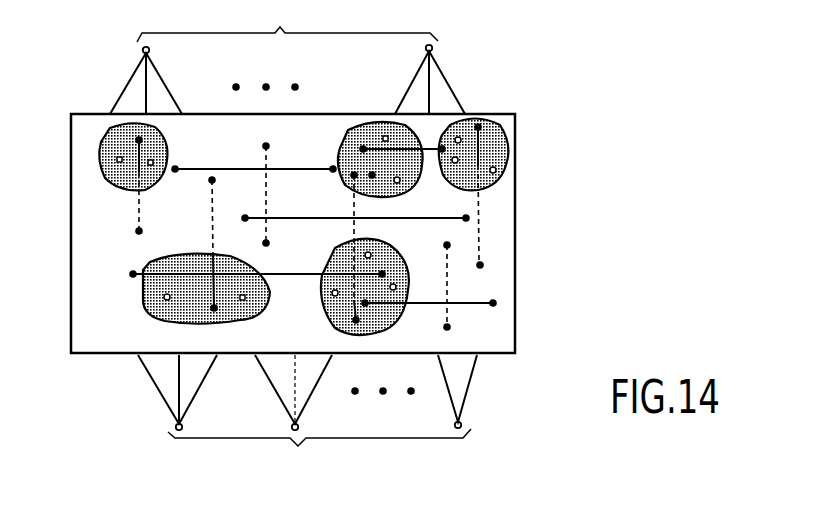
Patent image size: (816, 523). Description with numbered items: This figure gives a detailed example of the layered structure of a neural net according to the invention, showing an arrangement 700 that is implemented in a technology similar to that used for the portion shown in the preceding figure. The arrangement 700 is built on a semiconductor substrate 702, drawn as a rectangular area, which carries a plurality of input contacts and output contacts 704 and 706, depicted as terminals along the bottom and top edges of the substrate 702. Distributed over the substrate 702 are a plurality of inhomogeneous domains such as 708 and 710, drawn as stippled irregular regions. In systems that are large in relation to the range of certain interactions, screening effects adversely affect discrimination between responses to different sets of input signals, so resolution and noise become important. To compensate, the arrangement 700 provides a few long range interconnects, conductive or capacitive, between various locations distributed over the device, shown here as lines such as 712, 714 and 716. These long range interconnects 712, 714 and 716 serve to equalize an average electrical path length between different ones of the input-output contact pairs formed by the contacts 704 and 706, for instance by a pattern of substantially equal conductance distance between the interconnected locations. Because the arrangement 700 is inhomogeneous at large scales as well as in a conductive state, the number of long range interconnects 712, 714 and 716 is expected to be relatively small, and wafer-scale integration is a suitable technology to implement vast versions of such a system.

The arrangement 700 is at (68, 421).
The semiconductor substrate 702 is at (517, 216).
The output contacts 704 is at (307, 417).
The input contacts 706 is at (287, 58).
The inhomogeneous domain 708 is at (497, 157).
The inhomogeneous domain 710 is at (157, 295).
The long range interconnect 712 is at (480, 246).
The long range interconnect 714 is at (308, 167).
The long range interconnect 716 is at (263, 148).